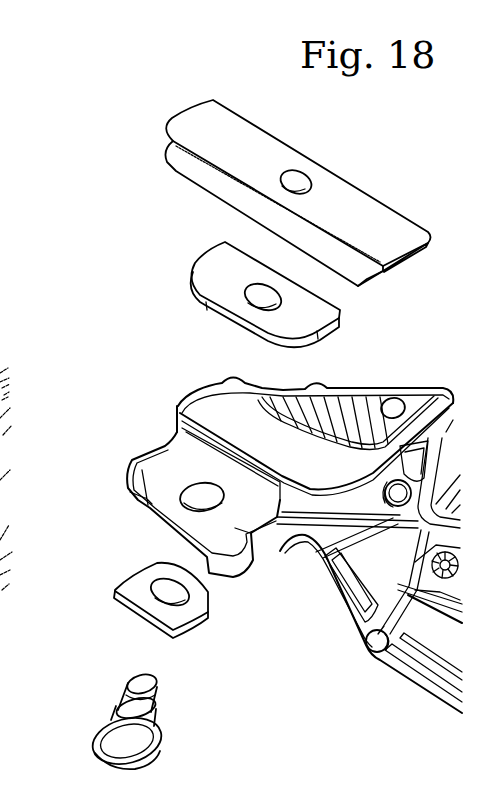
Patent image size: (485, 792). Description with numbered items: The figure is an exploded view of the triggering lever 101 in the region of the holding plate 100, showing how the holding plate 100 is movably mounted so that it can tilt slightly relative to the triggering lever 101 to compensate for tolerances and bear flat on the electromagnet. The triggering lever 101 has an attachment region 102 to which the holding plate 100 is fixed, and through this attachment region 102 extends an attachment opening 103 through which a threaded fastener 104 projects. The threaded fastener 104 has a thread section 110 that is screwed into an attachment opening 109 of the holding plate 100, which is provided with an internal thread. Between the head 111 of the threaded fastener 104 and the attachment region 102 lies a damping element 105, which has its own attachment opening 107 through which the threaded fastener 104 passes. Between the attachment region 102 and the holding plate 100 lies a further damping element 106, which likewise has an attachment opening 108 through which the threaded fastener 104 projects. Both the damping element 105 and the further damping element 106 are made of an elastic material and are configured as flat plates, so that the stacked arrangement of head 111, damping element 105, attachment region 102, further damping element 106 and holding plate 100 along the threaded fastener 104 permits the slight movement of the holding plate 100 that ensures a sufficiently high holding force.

The holding plate 100 is at (295, 172).
The triggering lever 101 is at (402, 655).
The attachment region 102 is at (184, 489).
The attachment opening 103 is at (199, 500).
The threaded fastener 104 is at (119, 708).
The damping element 105 is at (166, 602).
The further damping element 106 is at (245, 288).
The attachment opening 107 is at (172, 598).
The attachment opening 108 is at (258, 298).
The attachment opening 109 is at (302, 180).
The thread section 110 is at (128, 697).
The head 111 is at (95, 738).